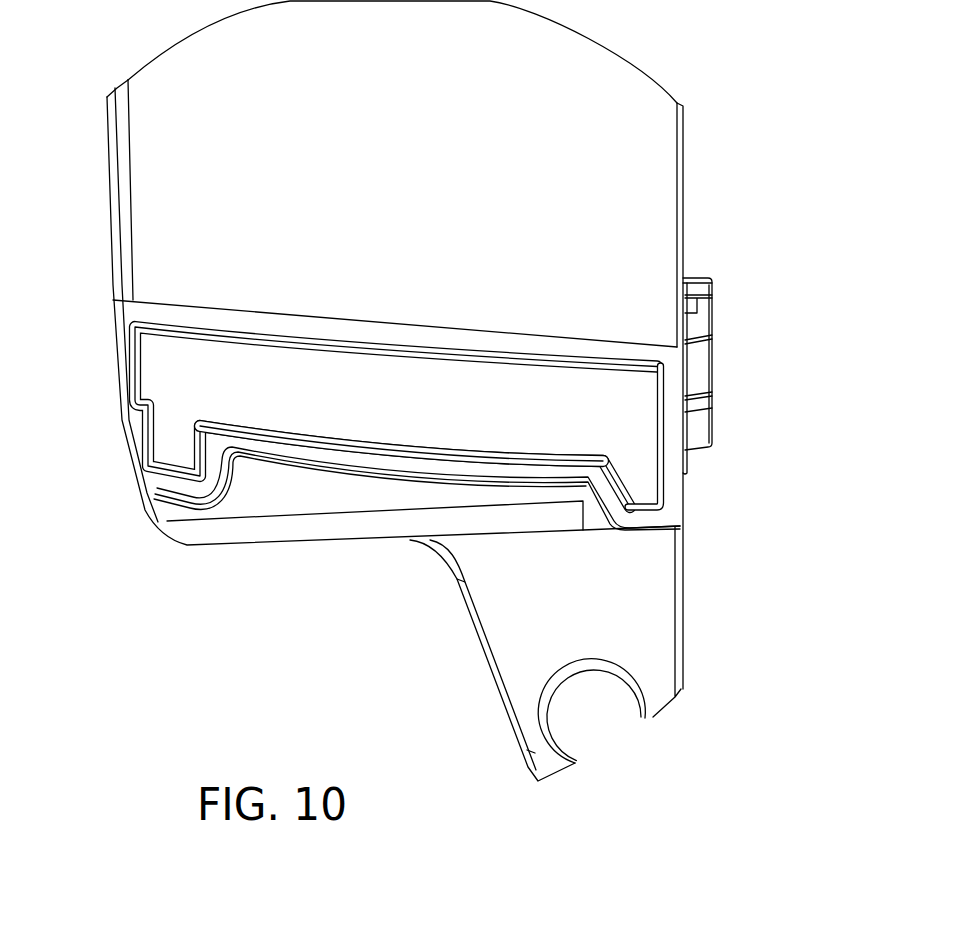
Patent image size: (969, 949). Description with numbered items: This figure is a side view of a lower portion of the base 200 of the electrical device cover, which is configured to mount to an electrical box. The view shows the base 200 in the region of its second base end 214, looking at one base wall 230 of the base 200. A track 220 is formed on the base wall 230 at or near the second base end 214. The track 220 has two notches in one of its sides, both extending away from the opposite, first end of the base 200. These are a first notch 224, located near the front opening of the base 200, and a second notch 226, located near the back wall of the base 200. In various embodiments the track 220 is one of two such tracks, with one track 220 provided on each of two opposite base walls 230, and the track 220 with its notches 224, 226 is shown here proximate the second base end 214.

The base 200 is at (686, 188).
The base wall 230 is at (537, 143).
The second base end 214 is at (567, 260).
The second notch 226 is at (665, 495).
The track 220 is at (357, 447).
The first notch 224 is at (160, 487).